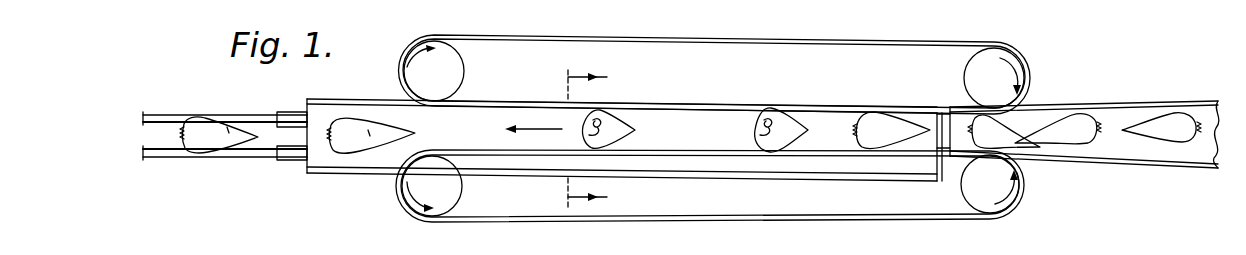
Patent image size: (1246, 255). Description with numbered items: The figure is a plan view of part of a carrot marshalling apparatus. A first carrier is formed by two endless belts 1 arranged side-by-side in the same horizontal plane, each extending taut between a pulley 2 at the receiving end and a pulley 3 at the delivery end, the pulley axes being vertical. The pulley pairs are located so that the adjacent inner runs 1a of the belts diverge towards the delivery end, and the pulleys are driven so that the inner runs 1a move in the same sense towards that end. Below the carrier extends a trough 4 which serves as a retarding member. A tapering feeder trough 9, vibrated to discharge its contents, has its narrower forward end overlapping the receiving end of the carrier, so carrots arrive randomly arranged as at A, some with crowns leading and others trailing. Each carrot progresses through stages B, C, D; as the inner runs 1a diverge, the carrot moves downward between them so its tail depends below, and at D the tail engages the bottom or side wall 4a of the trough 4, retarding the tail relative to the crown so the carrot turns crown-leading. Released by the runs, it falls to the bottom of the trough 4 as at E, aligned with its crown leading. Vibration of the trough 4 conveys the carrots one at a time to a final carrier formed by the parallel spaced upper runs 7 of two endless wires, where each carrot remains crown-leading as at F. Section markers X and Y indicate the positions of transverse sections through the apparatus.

The endless belt 1 is at (655, 15).
The inner run 1a is at (697, 108).
The pulley 2 is at (992, 62).
The pulley 3 is at (453, 58).
The trough 4 is at (380, 156).
The side wall 4a is at (374, 99).
The upper run 7 is at (162, 150).
The feeder trough 9 is at (1123, 102).
The randomly arranged carrots A is at (1010, 137).
The carrot stage B is at (884, 120).
The carrot stage C is at (792, 127).
The carrot stage D is at (618, 123).
The aligned carrot E is at (350, 122).
The carrot on final conveyor F is at (224, 131).
The section line X is at (599, 83).
The section line Y is at (598, 194).